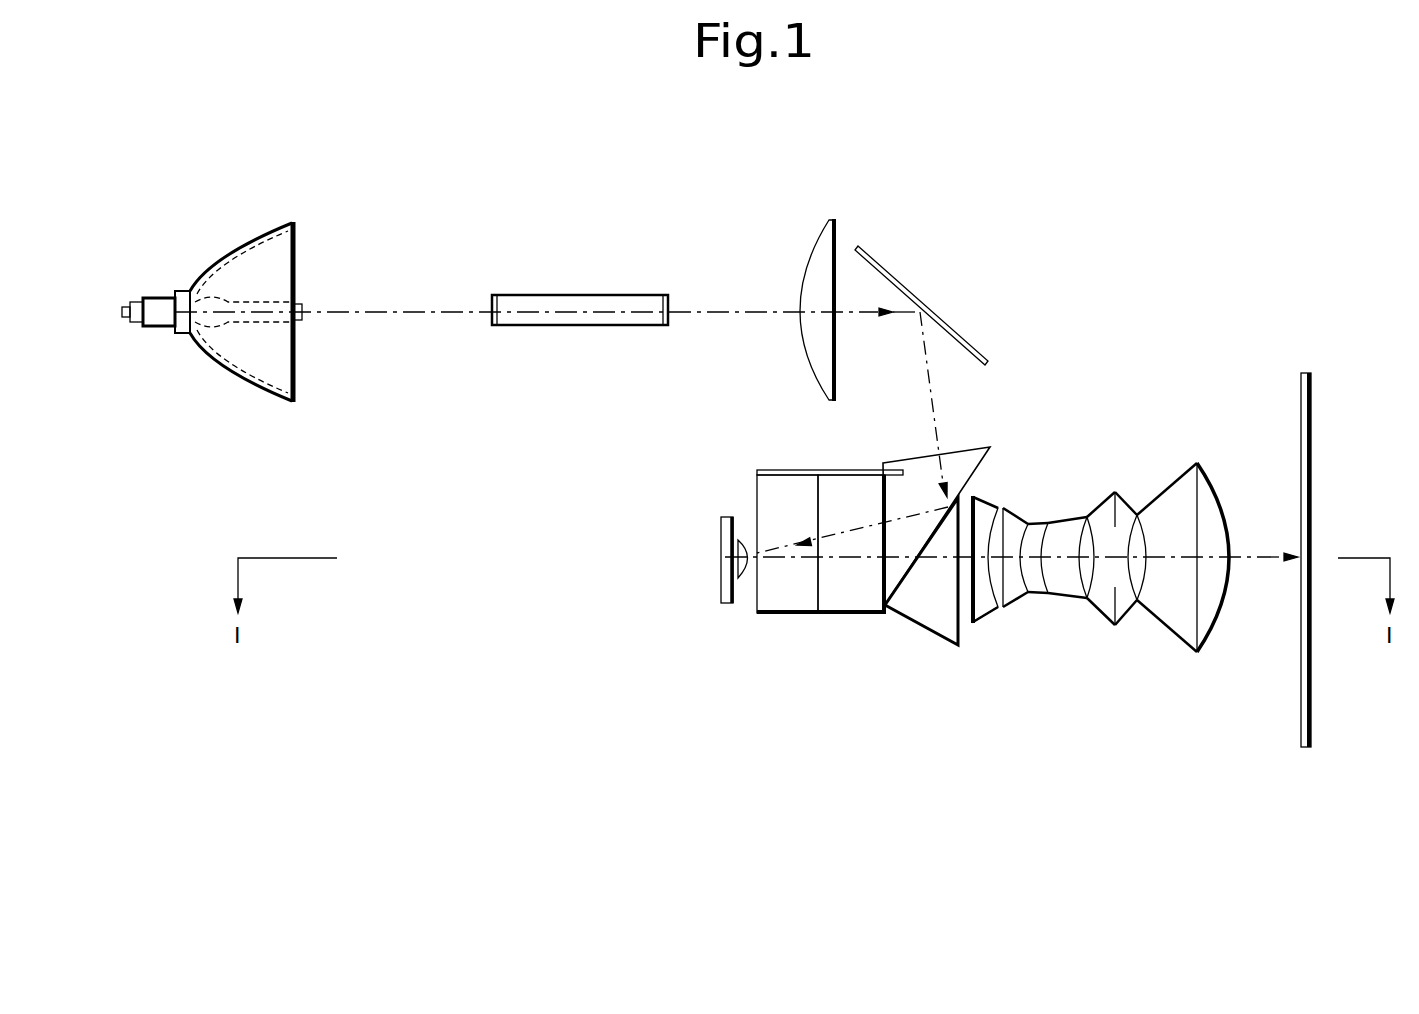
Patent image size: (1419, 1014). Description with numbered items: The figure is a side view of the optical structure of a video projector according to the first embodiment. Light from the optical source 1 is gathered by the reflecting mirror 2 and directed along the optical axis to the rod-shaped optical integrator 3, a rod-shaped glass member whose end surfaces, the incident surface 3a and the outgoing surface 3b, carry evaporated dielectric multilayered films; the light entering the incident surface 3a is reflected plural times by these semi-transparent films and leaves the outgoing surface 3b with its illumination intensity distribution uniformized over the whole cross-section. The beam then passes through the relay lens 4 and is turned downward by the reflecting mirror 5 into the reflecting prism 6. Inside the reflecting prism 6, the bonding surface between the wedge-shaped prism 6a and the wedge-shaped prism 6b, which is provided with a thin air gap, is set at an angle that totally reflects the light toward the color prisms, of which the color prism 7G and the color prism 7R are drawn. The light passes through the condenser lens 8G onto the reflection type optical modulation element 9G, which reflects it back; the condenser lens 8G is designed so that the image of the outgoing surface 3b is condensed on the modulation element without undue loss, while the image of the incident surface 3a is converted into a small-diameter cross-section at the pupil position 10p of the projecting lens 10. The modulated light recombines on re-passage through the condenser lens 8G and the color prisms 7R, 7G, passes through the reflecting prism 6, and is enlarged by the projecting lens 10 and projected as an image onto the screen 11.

The optical source 1 is at (192, 288).
The reflecting mirror 2 is at (262, 227).
The rod-shaped optical integrator 3 is at (630, 304).
The incident surface 3a is at (492, 295).
The outgoing surface 3b is at (673, 295).
The relay lens 4 is at (828, 220).
The reflecting mirror 5 is at (932, 300).
The reflecting prism 6 is at (1015, 567).
The wedge-shaped prism 6a is at (963, 462).
The wedge-shaped prism 6b is at (933, 612).
The color prism 7G is at (767, 618).
The color prism 7R is at (828, 618).
The condenser lens 8G is at (725, 598).
The reflection type optical modulation element 9G is at (738, 573).
The projecting lens 10 is at (1105, 621).
The pupil position 10p is at (1110, 600).
The screen 11 is at (1303, 373).